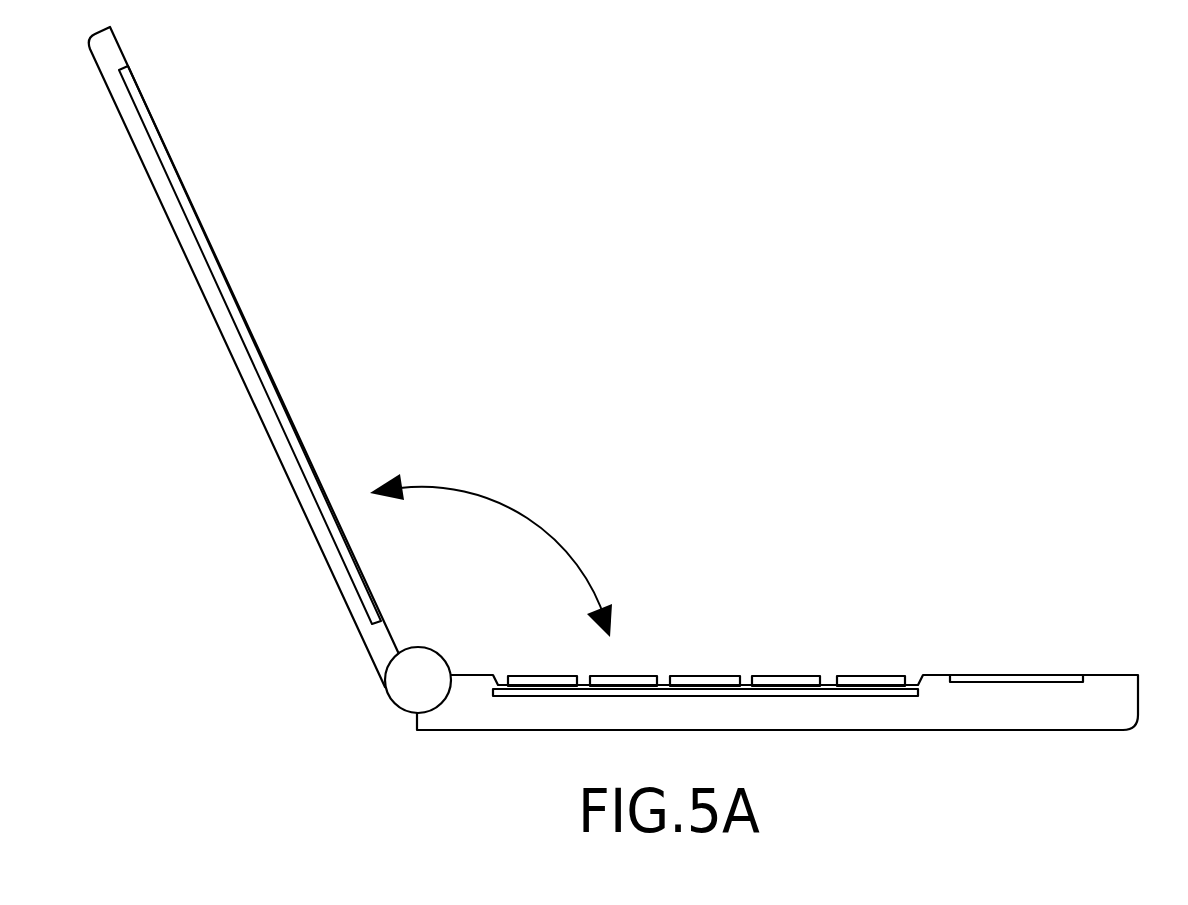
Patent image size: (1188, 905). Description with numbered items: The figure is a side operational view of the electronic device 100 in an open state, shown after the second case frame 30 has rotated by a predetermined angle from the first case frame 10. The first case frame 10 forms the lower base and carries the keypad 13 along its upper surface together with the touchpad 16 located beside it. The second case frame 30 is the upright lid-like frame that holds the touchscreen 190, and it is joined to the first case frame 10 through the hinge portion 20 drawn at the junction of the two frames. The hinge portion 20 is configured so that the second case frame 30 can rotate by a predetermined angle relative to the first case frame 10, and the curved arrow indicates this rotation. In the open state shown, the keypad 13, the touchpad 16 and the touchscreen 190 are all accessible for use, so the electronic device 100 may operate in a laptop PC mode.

The electronic device 100 is at (775, 205).
The first case frame 10 is at (1105, 700).
The keypad 13 is at (787, 683).
The touchpad 16 is at (997, 678).
The hinge portion 20 is at (413, 682).
The second case frame 30 is at (178, 221).
The touchscreen 190 is at (235, 308).